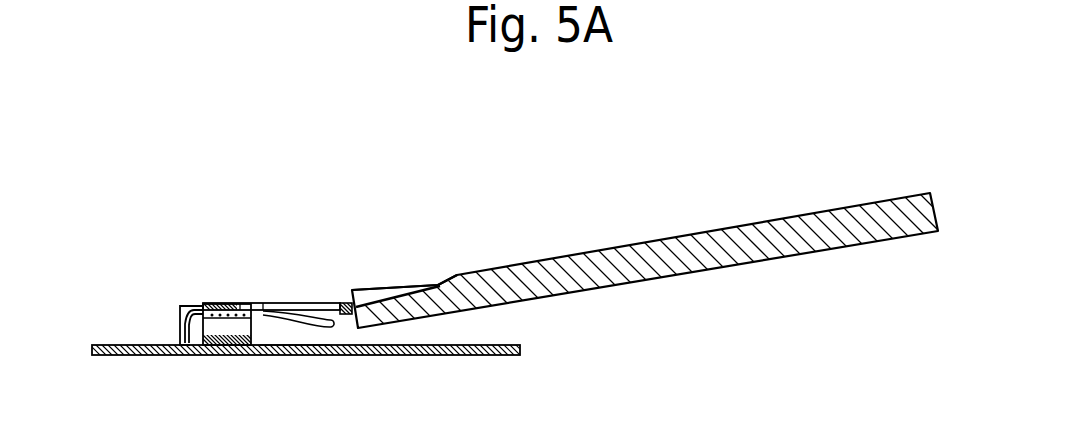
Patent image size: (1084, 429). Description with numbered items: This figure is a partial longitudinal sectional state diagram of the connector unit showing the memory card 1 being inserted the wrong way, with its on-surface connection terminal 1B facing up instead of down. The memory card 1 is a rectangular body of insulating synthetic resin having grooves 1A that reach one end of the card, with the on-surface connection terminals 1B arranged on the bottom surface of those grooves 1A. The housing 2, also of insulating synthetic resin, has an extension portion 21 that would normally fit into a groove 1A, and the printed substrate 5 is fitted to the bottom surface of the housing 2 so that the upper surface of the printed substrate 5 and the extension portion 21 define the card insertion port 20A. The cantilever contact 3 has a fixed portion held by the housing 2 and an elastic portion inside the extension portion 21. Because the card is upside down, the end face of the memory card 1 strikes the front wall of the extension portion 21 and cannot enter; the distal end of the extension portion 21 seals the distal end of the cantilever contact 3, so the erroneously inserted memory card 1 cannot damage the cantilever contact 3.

The memory card 1 is at (568, 250).
The groove 1A is at (383, 287).
The on-surface connection terminal 1B is at (442, 284).
The housing 2 is at (210, 303).
The cantilever contact 3 is at (263, 304).
The printed substrate 5 is at (116, 345).
The extension portion 21 is at (343, 303).
The card insertion port 20A is at (287, 333).